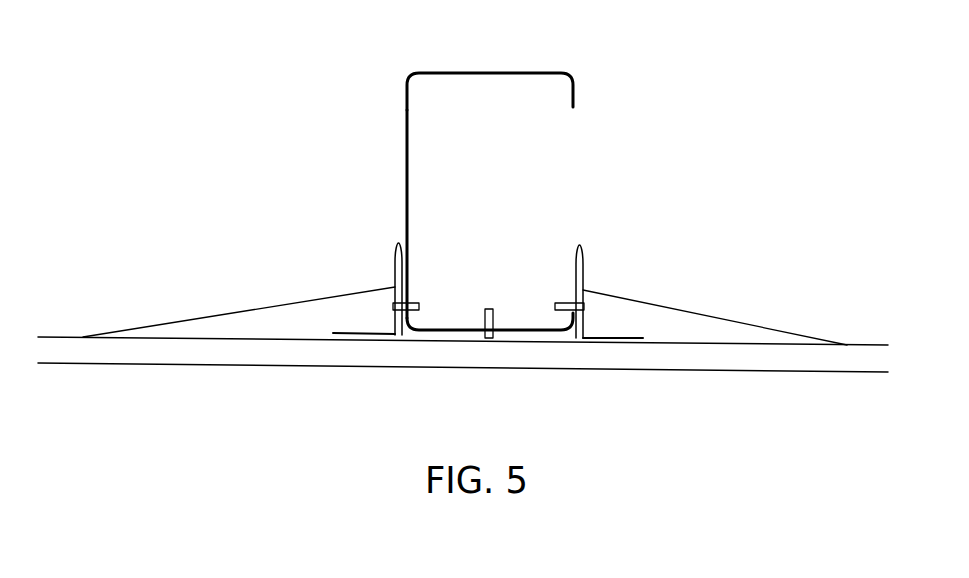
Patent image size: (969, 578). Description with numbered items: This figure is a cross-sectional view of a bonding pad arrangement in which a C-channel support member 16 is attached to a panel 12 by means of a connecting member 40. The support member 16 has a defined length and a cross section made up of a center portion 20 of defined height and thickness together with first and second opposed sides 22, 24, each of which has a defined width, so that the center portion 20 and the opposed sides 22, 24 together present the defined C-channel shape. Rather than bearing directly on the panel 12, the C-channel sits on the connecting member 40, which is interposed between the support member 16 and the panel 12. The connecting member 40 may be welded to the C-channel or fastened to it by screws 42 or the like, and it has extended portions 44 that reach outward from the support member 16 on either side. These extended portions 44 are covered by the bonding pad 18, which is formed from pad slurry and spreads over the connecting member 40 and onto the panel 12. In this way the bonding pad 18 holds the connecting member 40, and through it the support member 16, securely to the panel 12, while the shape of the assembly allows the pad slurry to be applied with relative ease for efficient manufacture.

The panel 12 is at (773, 353).
The support member 16 is at (491, 239).
The bonding pad 18 is at (672, 327).
The center portion 20 is at (407, 223).
The first opposed side 22 is at (537, 340).
The second opposed side 24 is at (532, 73).
The connecting member 40 is at (583, 251).
The screws 42 is at (562, 302).
The extended portions 44 is at (368, 337).